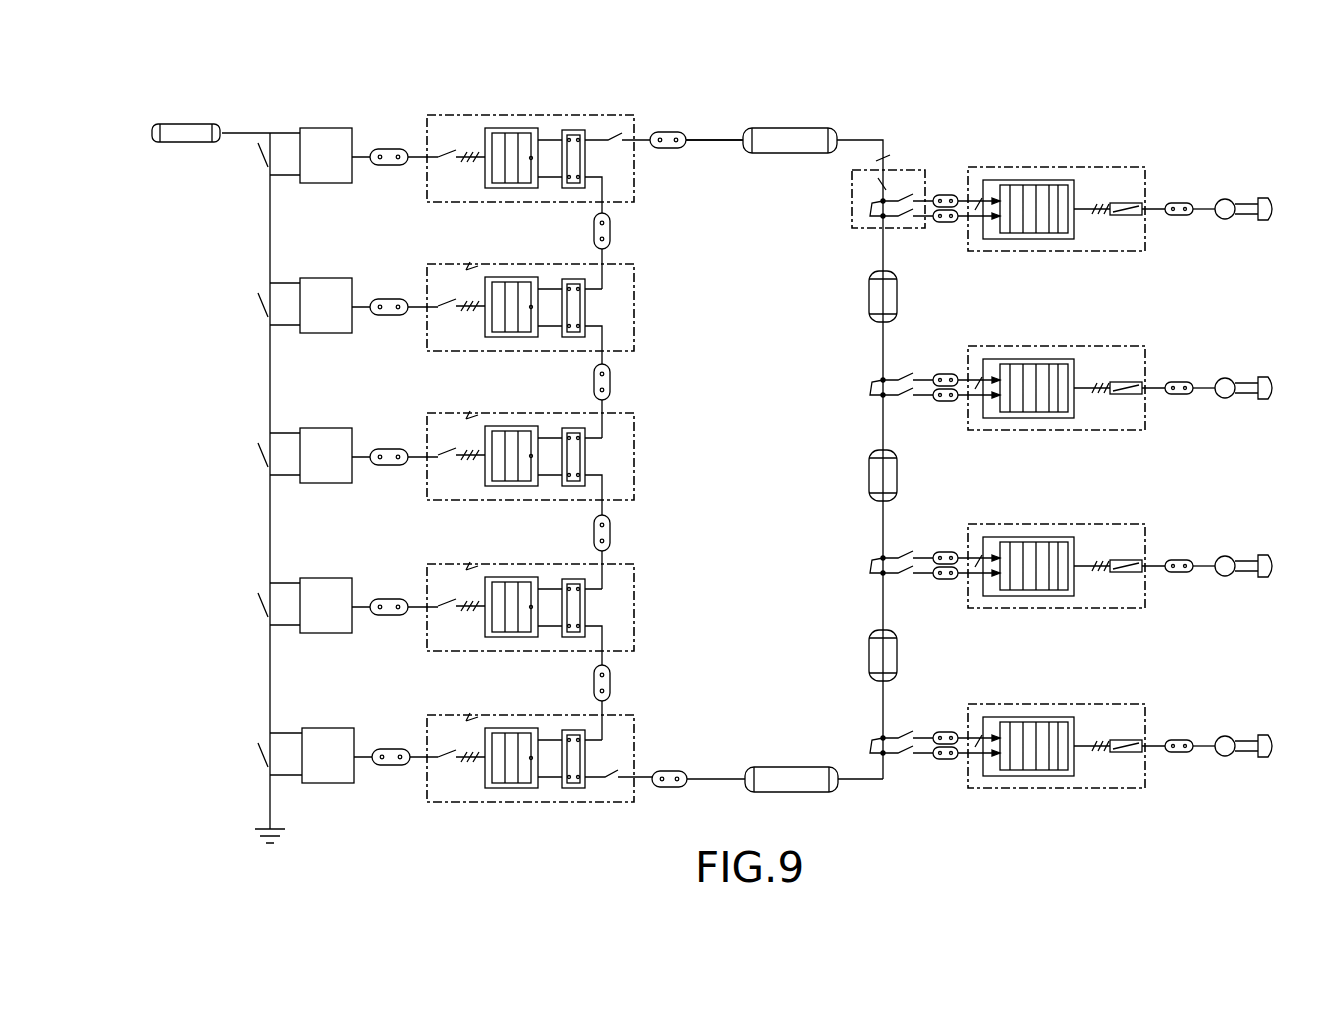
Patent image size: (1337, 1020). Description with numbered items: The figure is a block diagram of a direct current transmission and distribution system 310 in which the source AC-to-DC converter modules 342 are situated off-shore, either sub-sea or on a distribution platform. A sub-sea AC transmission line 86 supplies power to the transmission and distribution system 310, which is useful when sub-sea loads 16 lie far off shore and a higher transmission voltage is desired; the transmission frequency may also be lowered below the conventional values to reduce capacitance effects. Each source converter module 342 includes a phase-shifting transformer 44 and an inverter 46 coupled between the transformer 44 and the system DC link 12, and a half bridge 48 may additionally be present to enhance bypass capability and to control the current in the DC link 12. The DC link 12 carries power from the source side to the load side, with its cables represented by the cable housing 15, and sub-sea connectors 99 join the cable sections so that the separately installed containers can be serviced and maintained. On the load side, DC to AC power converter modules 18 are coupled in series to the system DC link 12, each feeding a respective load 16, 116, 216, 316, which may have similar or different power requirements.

The transmission and distribution system 310 is at (219, 232).
The AC transmission line 86 is at (190, 122).
The phase-shifting transformer 44 is at (317, 127).
The source AC-to-DC converter module 342 is at (493, 115).
The inverter 46 is at (483, 190).
The half bridge 48 is at (558, 190).
The connector 99 is at (668, 130).
The system DC link 12 is at (740, 155).
The cable housing 15 is at (795, 153).
The DC to AC power converter module 18 is at (1020, 165).
The load 16 is at (1224, 198).
The load 116 is at (1248, 371).
The load 216 is at (1245, 552).
The load 316 is at (1242, 731).